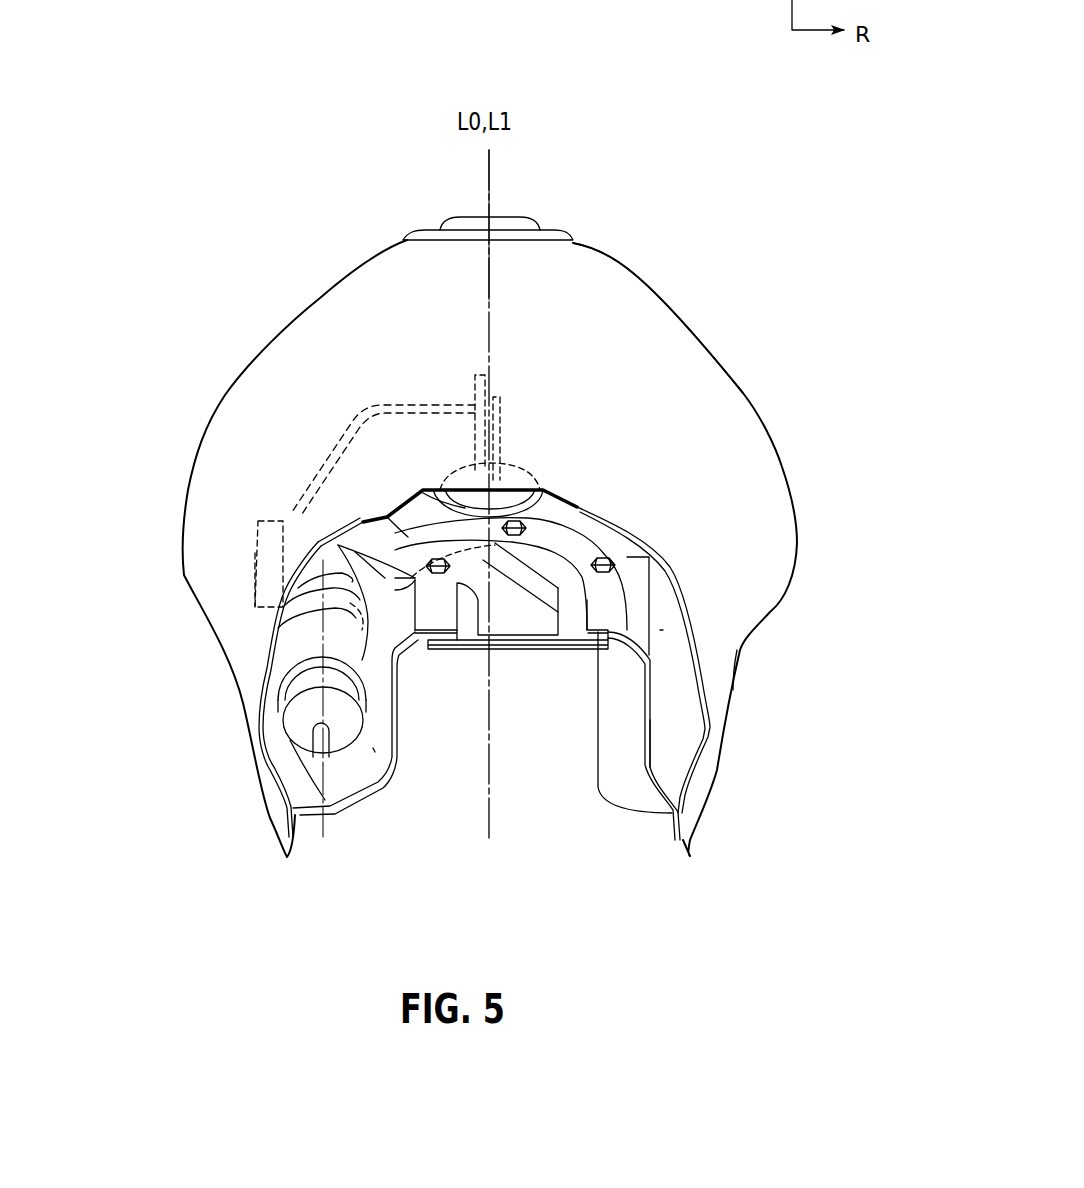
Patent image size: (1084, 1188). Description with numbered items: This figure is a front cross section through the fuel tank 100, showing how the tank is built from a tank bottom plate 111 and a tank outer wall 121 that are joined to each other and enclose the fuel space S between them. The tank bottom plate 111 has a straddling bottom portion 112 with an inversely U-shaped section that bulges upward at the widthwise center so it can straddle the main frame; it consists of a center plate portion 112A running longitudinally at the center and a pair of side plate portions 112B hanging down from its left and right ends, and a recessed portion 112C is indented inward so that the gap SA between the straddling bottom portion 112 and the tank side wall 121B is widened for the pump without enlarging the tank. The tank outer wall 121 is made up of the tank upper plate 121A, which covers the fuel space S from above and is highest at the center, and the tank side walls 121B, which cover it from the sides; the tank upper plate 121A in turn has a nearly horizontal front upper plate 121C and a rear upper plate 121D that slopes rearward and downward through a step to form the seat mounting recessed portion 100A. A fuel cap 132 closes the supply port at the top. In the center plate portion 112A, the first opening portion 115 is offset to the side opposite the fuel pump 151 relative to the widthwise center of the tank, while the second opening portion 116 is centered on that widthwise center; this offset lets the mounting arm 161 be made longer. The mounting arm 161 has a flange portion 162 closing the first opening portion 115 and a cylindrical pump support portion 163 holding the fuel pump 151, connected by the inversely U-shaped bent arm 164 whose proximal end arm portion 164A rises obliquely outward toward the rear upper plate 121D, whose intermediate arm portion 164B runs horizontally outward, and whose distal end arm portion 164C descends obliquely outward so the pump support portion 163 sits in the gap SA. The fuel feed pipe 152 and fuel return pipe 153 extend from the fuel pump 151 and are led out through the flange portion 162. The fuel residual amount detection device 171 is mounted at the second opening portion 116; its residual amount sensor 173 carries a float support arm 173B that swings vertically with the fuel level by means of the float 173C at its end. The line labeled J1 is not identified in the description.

The fuel tank 100 is at (584, 101).
The seat mounting recessed portion 100A is at (584, 471).
The tank bottom plate 111 is at (652, 750).
The straddling bottom portion 112 is at (589, 730).
The center plate portion 112A is at (578, 625).
The side plate portions 112B is at (650, 775).
The recessed portion 112C is at (405, 712).
The first opening portion 115 is at (609, 616).
The second opening portion 116 is at (503, 603).
The tank outer wall 121 is at (689, 318).
The tank upper plate 121A is at (716, 309).
The tank side walls 121B is at (737, 650).
The front upper plate 121C is at (590, 243).
The rear upper plate 121D is at (563, 453).
The fuel cap 132 is at (520, 212).
The fuel pump 151 is at (290, 740).
The fuel feed pipe 152 is at (290, 568).
The fuel return pipe 153 is at (300, 612).
The mounting arm 161 is at (537, 557).
The flange portion 162 is at (550, 657).
The pump support portion 163 is at (300, 645).
The bent arm 164 is at (260, 396).
The proximal end arm portion 164A is at (423, 493).
The intermediate arm portion 164B is at (387, 517).
The distal end arm portion 164C is at (355, 552).
The fuel residual amount detection device 171 is at (445, 394).
The residual amount sensor 173 is at (505, 387).
The float support arm 173B is at (283, 511).
The float 173C is at (253, 553).
The fuel space S is at (660, 630).
The gap SA is at (373, 748).
The joint axis J1 is at (318, 819).